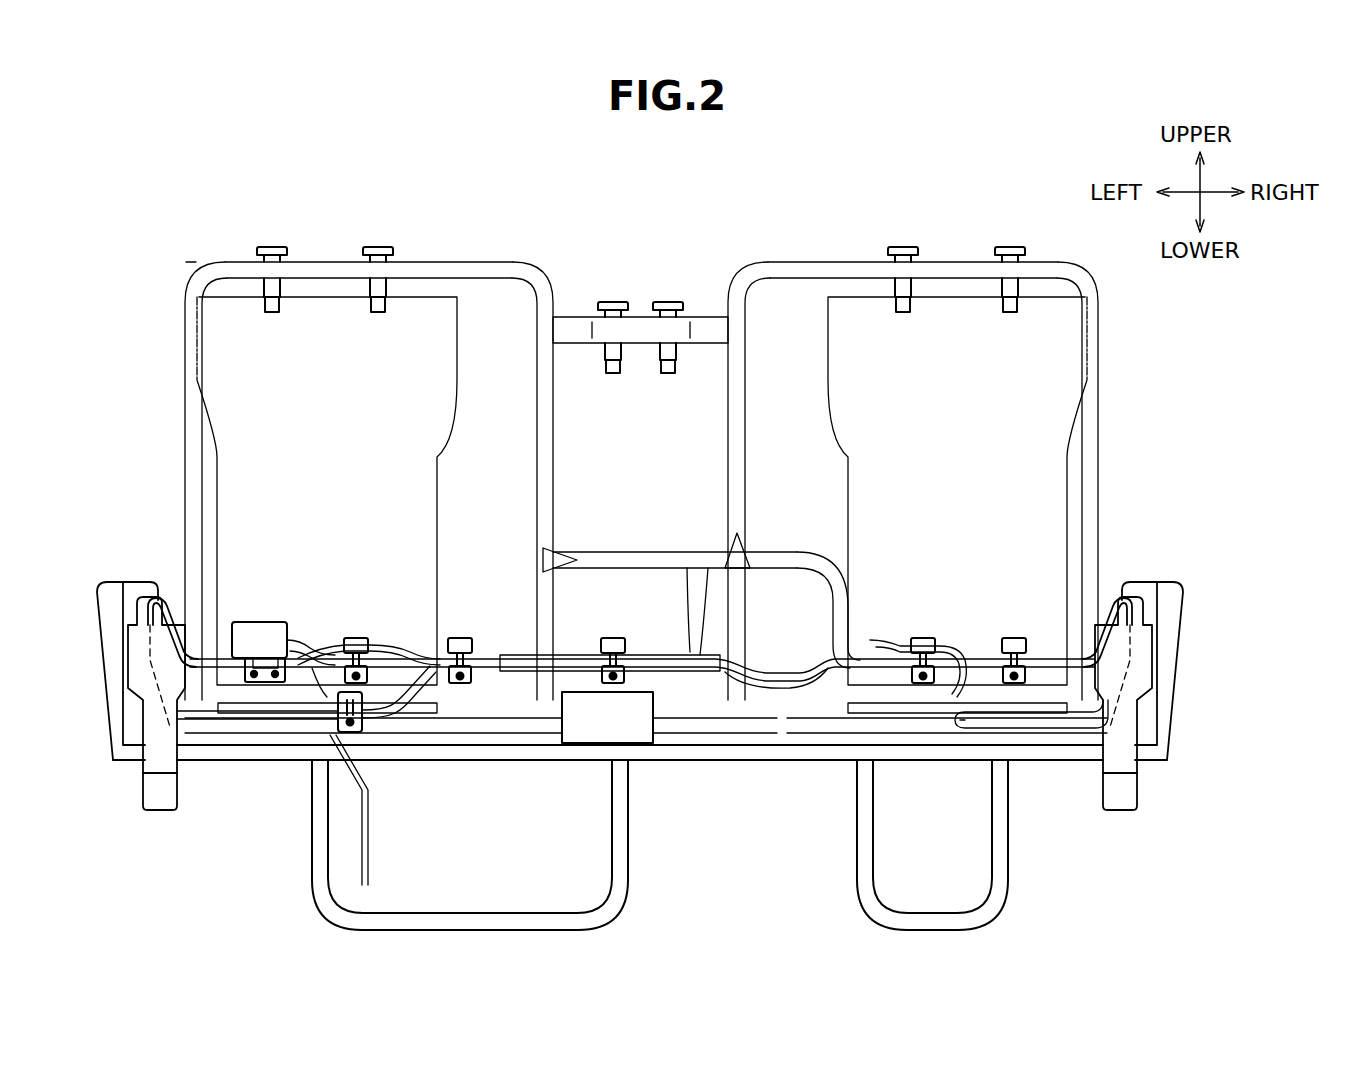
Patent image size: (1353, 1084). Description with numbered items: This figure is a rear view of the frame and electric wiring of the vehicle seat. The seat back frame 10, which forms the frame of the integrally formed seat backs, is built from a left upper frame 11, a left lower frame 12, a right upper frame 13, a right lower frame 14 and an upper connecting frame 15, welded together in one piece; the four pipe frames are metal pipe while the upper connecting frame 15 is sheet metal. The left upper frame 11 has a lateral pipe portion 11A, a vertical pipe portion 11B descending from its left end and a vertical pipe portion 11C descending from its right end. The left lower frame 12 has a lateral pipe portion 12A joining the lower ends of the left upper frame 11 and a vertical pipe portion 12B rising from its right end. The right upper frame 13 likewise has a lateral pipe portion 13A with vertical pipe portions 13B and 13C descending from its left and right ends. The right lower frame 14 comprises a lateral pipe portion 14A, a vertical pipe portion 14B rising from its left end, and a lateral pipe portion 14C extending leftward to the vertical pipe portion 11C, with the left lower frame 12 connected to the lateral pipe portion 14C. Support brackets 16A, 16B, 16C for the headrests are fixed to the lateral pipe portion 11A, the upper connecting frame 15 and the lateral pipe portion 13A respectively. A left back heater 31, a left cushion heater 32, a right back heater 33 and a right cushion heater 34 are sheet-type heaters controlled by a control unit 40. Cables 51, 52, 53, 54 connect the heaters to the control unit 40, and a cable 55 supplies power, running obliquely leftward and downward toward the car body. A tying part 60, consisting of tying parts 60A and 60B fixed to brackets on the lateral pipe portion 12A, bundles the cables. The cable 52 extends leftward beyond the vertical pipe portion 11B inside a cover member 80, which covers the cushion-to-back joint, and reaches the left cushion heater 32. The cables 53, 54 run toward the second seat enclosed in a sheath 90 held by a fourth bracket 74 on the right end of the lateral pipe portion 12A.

The seat back frame 10 is at (193, 257).
The left upper frame 11 is at (489, 255).
The lateral pipe portion 11A is at (437, 266).
The vertical pipe portion 11B is at (190, 426).
The vertical pipe portion 11C is at (555, 428).
The left lower frame 12 is at (686, 690).
The lateral pipe portion 12A is at (510, 685).
The vertical pipe portion 12B is at (700, 606).
The right upper frame 13 is at (791, 255).
The lateral pipe portion 13A is at (843, 266).
The vertical pipe portion 13B is at (730, 452).
The vertical pipe portion 13C is at (1093, 463).
The right lower frame 14 is at (786, 544).
The lateral pipe portion 14A is at (982, 680).
The vertical pipe portion 14B is at (834, 632).
The lateral pipe portion 14C is at (641, 550).
The upper connecting frame 15 is at (573, 312).
The support brackets 16A is at (370, 245).
The support brackets 16B is at (672, 300).
The support brackets 16C is at (1002, 245).
The left back heater 31 is at (250, 478).
The left cushion heater 32 is at (286, 715).
The right back heater 33 is at (1055, 492).
The right cushion heater 34 is at (910, 715).
The control unit 40 is at (264, 630).
The cable 51 is at (396, 646).
The cable 52 is at (236, 722).
The cable 53 is at (880, 648).
The cable 54 is at (1048, 732).
The cable 55 is at (370, 831).
The tying part 60 is at (438, 627).
The tying part 60A is at (462, 636).
The tying part 60B is at (357, 636).
The fourth bracket 74 is at (613, 636).
The cover member 80 is at (132, 584).
The sheath 90 is at (752, 670).